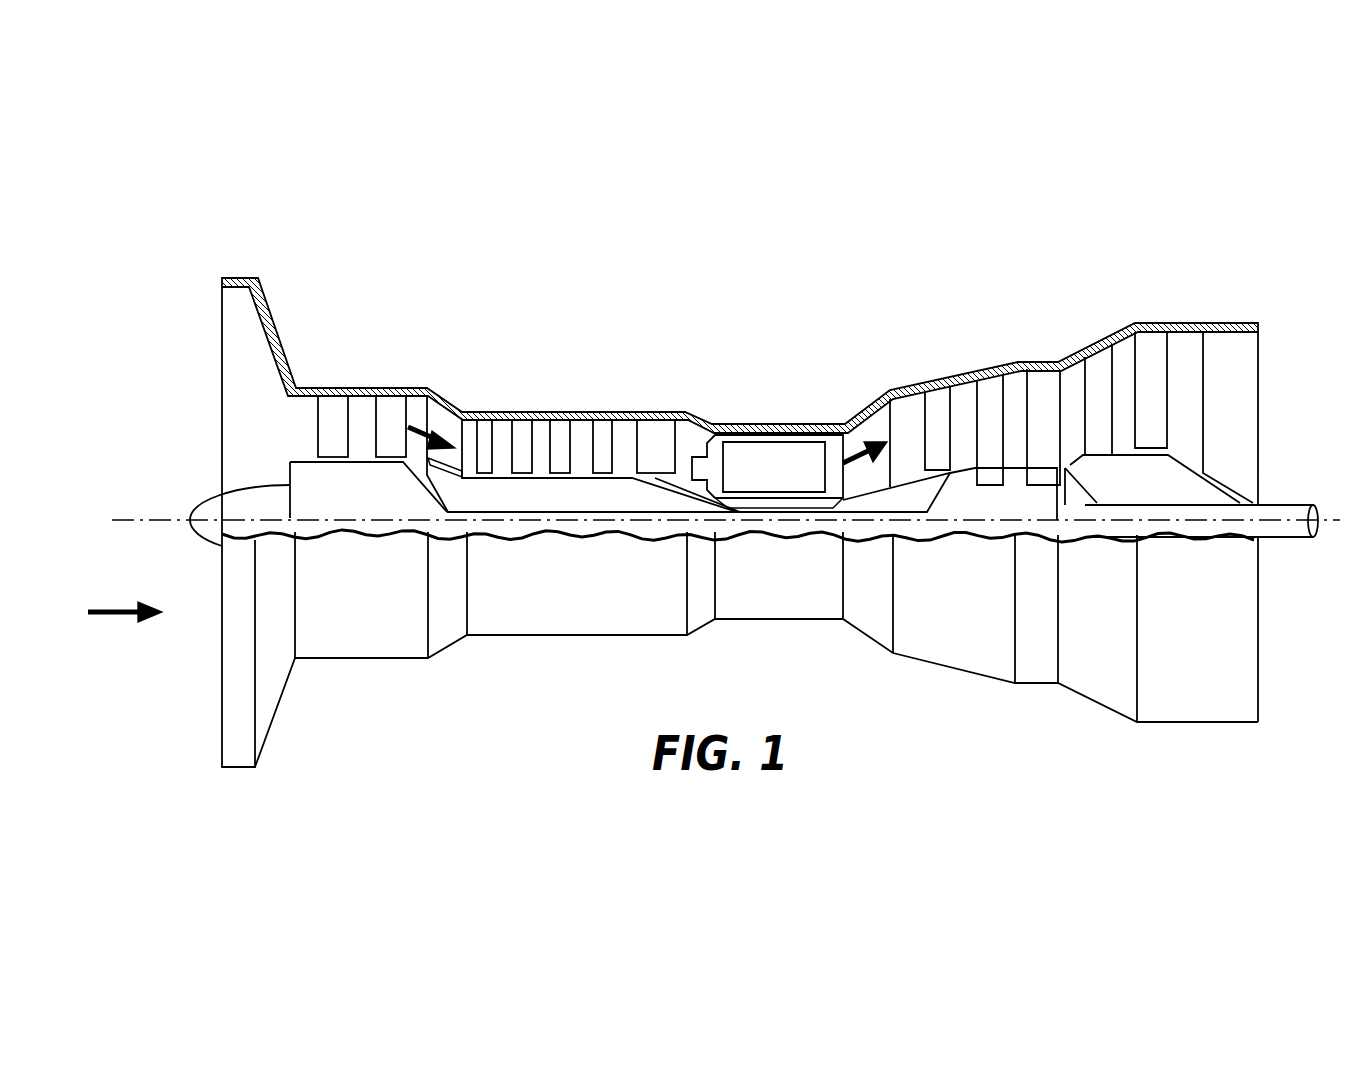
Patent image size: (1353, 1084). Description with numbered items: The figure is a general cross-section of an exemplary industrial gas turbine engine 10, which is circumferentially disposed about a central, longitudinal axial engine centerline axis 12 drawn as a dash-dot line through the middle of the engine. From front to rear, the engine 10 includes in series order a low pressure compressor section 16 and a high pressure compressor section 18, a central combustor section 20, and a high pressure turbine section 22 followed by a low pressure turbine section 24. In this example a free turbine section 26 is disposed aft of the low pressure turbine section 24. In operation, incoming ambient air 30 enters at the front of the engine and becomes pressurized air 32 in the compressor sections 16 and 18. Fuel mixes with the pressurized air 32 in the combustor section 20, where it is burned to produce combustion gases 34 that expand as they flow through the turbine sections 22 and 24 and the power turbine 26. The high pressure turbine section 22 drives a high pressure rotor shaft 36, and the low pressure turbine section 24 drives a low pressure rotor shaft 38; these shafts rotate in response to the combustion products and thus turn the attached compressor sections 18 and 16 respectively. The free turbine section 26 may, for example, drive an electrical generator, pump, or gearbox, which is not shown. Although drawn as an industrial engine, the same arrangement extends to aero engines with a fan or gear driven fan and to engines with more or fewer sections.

The industrial gas turbine engine 10 is at (840, 278).
The axial engine centerline axis 12 is at (158, 519).
The low pressure compressor section 16 is at (353, 375).
The high pressure compressor section 18 is at (596, 384).
The combustor section 20 is at (742, 423).
The high pressure turbine section 22 is at (942, 380).
The low pressure turbine section 24 is at (1047, 345).
The free turbine section 26 is at (1197, 318).
The incoming ambient air 30 is at (119, 608).
The pressurized air 32 is at (431, 436).
The combustion gases 34 is at (855, 445).
The high pressure rotor shaft 36 is at (778, 380).
The low pressure rotor shaft 38 is at (441, 502).